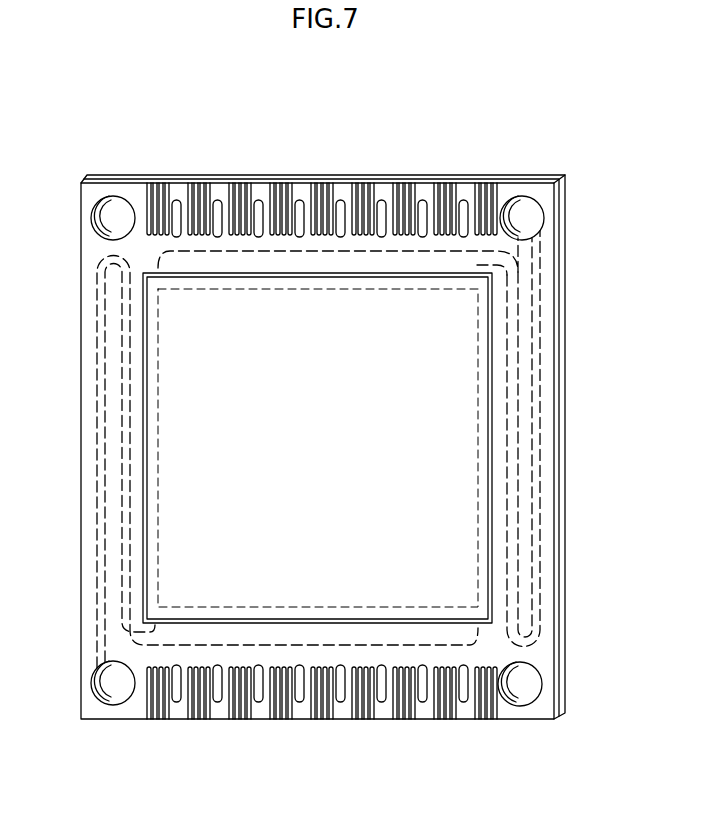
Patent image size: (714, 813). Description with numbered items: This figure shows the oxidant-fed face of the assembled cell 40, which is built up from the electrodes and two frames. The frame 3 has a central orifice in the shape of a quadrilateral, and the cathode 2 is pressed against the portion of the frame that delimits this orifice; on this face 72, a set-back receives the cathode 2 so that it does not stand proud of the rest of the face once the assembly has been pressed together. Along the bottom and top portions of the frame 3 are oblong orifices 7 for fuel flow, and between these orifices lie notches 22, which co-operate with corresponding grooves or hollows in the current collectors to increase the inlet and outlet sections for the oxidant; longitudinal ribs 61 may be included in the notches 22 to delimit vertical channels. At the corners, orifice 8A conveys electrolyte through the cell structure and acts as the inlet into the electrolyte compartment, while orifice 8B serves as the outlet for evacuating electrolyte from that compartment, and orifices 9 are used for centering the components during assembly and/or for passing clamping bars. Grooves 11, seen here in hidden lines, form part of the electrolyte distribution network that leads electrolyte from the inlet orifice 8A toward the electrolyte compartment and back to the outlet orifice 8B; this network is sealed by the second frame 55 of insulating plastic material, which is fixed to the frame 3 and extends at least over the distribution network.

The cathode 2 is at (178, 443).
The frame 3 is at (98, 250).
The orifices for fuel flow 7 is at (294, 190).
The orifice 8A is at (528, 222).
The orifice 8B is at (117, 685).
The orifices 9 is at (105, 222).
The grooves 11 is at (120, 373).
The notches 22 is at (234, 181).
The cell 40 is at (172, 162).
The second frame 55 is at (538, 177).
The longitudinal ribs 61 is at (362, 182).
The face 72 is at (527, 428).